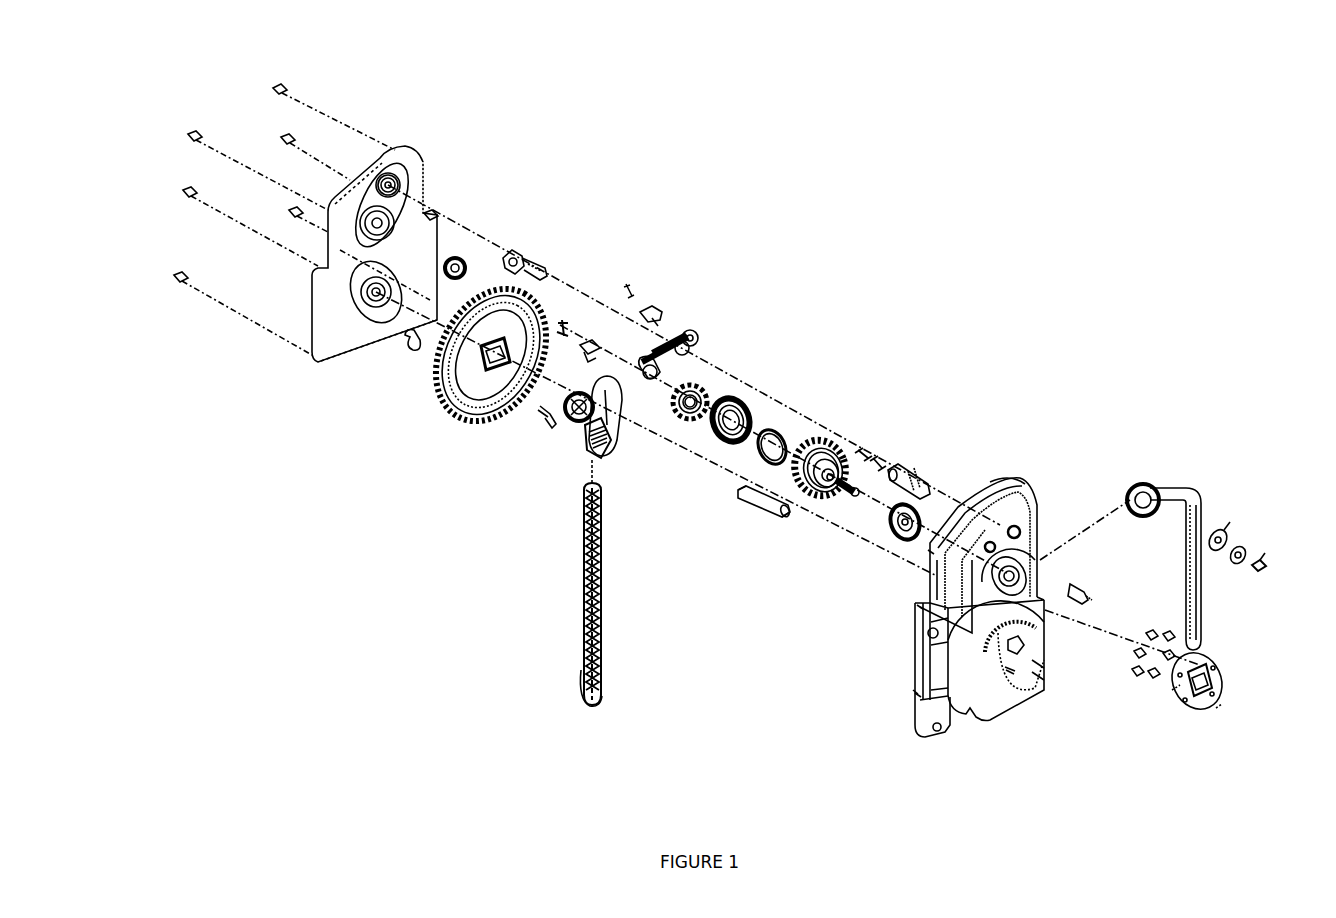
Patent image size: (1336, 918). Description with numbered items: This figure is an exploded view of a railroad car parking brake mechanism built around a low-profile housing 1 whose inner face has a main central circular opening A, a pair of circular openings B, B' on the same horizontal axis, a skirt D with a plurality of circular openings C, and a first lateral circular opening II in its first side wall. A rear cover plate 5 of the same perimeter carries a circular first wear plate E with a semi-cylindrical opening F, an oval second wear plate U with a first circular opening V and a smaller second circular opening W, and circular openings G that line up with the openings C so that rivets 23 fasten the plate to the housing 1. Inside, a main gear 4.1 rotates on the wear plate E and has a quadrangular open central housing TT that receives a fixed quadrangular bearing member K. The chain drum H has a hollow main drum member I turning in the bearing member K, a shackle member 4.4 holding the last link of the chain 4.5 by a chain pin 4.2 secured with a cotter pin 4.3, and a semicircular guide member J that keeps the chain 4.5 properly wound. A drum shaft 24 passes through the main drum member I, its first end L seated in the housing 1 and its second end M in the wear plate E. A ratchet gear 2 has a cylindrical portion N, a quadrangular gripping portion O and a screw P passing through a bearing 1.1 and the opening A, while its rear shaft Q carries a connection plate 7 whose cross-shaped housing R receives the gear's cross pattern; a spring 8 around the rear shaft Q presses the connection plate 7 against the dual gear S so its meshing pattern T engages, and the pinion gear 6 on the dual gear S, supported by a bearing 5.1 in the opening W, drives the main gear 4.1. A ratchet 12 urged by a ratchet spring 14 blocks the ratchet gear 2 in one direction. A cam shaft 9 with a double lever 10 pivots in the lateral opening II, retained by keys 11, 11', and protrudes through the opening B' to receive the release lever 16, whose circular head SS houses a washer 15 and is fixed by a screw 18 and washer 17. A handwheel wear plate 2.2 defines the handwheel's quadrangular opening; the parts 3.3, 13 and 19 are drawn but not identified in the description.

The low-profile housing 1 is at (1040, 500).
The bearing 1.1 is at (894, 540).
The ratchet gear 2 is at (840, 448).
The handwheel wear plate 2.2 is at (1204, 660).
The nuts 3.3 is at (1138, 676).
The main gear 4.1 is at (443, 407).
The chain pin 4.2 is at (546, 420).
The cotter pin 4.3 is at (540, 395).
The shackle member 4.4 is at (584, 452).
The chain 4.5 is at (583, 572).
The rear cover plate 5 is at (422, 150).
The bearing 5.1 is at (460, 262).
The pinion gear 6 is at (694, 388).
The connection plate 7 is at (748, 400).
The spring 8 is at (785, 432).
The cam shaft 9 is at (522, 258).
The double lever 10 is at (700, 332).
The key 11 is at (666, 300).
The key 11' is at (601, 262).
The ratchet 12 is at (915, 479).
The screw 13 is at (1084, 590).
The ratchet spring 14 is at (883, 462).
The washer 15 is at (1222, 528).
The release lever 16 is at (1187, 488).
The washer 17 is at (1242, 546).
The screw 18 is at (1264, 560).
The spring pin 19 is at (632, 286).
The rivets 23 is at (288, 86).
The drum shaft 24 is at (758, 512).
The main central circular opening A is at (1012, 573).
The circular opening B is at (915, 630).
The circular opening B' is at (1049, 502).
The circular openings C is at (930, 553).
The skirt D is at (1012, 479).
The first wear plate E is at (360, 318).
The semi-cylindrical shaped opening F is at (375, 298).
The circular openings G is at (424, 164).
The chain drum H is at (621, 440).
The main drum member I is at (608, 443).
The guide member J is at (606, 388).
The bearing member K is at (575, 422).
The first end L is at (778, 527).
The second end M is at (738, 502).
The cylindrical portion N is at (822, 490).
The quadrangular gripping portion O is at (834, 488).
The screw P is at (848, 494).
The rear shaft Q is at (808, 452).
The cross-shaped housing R is at (756, 432).
The dual gear S is at (675, 392).
The meshing pattern T is at (728, 412).
The second oval-shaped wear plate U is at (397, 156).
The first circular opening V is at (393, 183).
The second circular opening W is at (382, 225).
The circular head SS is at (1140, 488).
The open central housing TT is at (492, 364).
The first lateral circular opening II is at (913, 692).